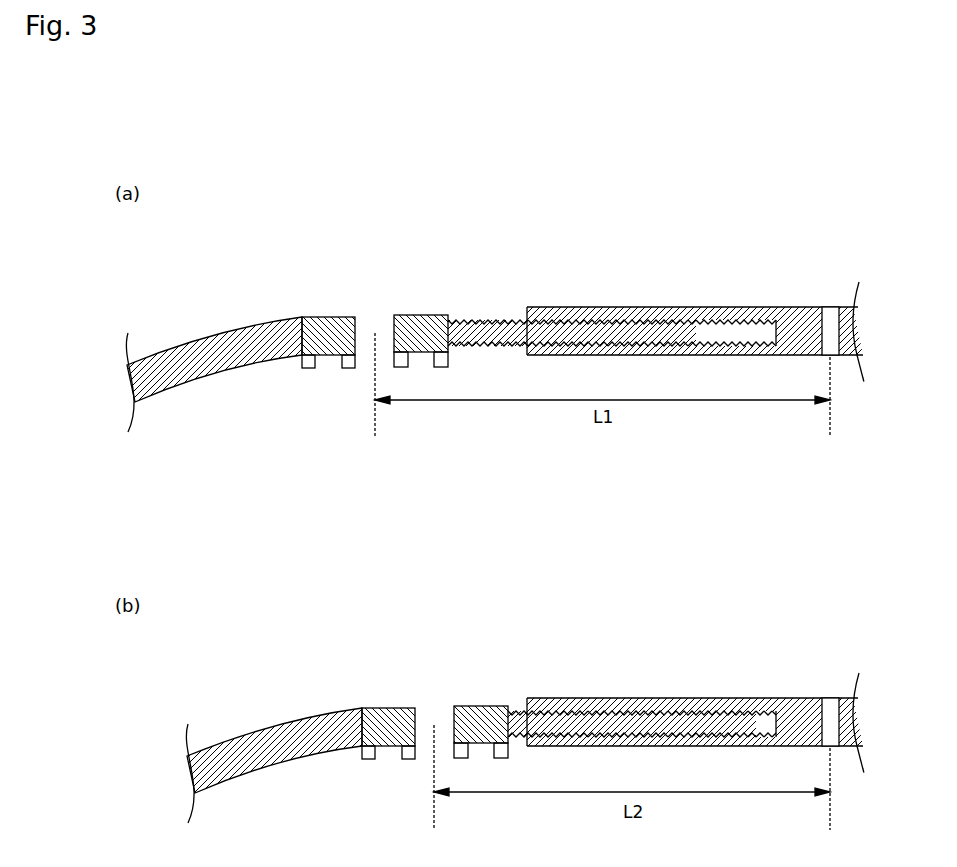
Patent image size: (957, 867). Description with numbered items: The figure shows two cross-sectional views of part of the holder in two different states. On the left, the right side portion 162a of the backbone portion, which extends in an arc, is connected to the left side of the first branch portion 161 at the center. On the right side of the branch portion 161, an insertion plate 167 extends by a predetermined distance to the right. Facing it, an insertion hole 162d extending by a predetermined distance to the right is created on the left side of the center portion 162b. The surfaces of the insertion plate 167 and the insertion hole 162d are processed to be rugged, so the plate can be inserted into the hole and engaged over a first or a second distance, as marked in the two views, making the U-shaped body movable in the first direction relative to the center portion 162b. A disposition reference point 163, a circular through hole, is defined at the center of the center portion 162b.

The right side portion 162a is at (207, 348).
The first branch portion 161 is at (328, 327).
The insertion plate 167 is at (490, 333).
The insertion hole 162d is at (728, 332).
The center portion 162b is at (802, 330).
The disposition reference point 163 is at (830, 330).